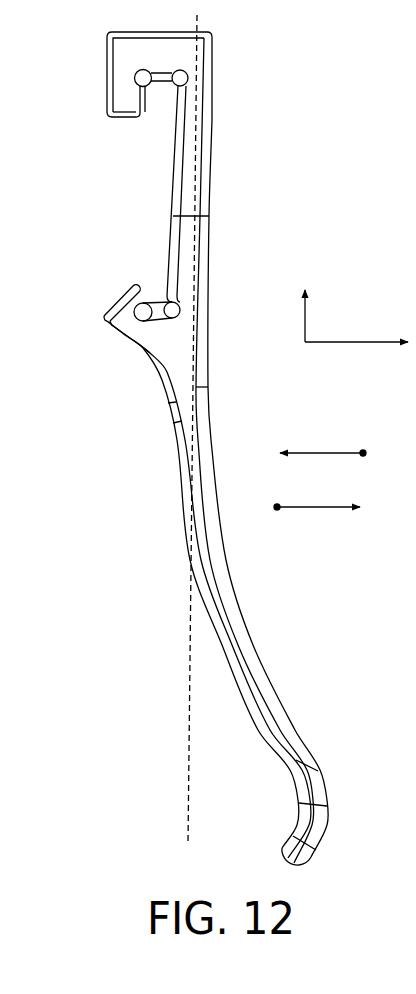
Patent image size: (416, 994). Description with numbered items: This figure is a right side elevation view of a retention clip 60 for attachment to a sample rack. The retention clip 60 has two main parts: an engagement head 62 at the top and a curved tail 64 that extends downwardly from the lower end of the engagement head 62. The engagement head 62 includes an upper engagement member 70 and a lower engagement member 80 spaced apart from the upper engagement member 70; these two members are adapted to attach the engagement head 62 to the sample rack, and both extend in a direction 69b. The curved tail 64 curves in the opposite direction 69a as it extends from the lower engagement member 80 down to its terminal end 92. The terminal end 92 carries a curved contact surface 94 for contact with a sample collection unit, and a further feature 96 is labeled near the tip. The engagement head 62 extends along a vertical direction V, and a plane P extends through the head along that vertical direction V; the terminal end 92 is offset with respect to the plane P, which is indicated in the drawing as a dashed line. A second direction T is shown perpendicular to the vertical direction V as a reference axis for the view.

The retention clip 60 is at (242, 83).
The engagement head 62 is at (223, 175).
The curved tail 64 is at (257, 633).
The upper engagement member 70 is at (102, 125).
The lower engagement member 80 is at (127, 353).
The terminal end 92 is at (270, 808).
The curved contact surface 94 is at (327, 822).
The end face 96 is at (408, 842).
The direction 69a is at (313, 453).
The direction 69b is at (313, 507).
The vertical direction V is at (305, 324).
The transverse axis T is at (347, 342).
The plane P is at (188, 715).